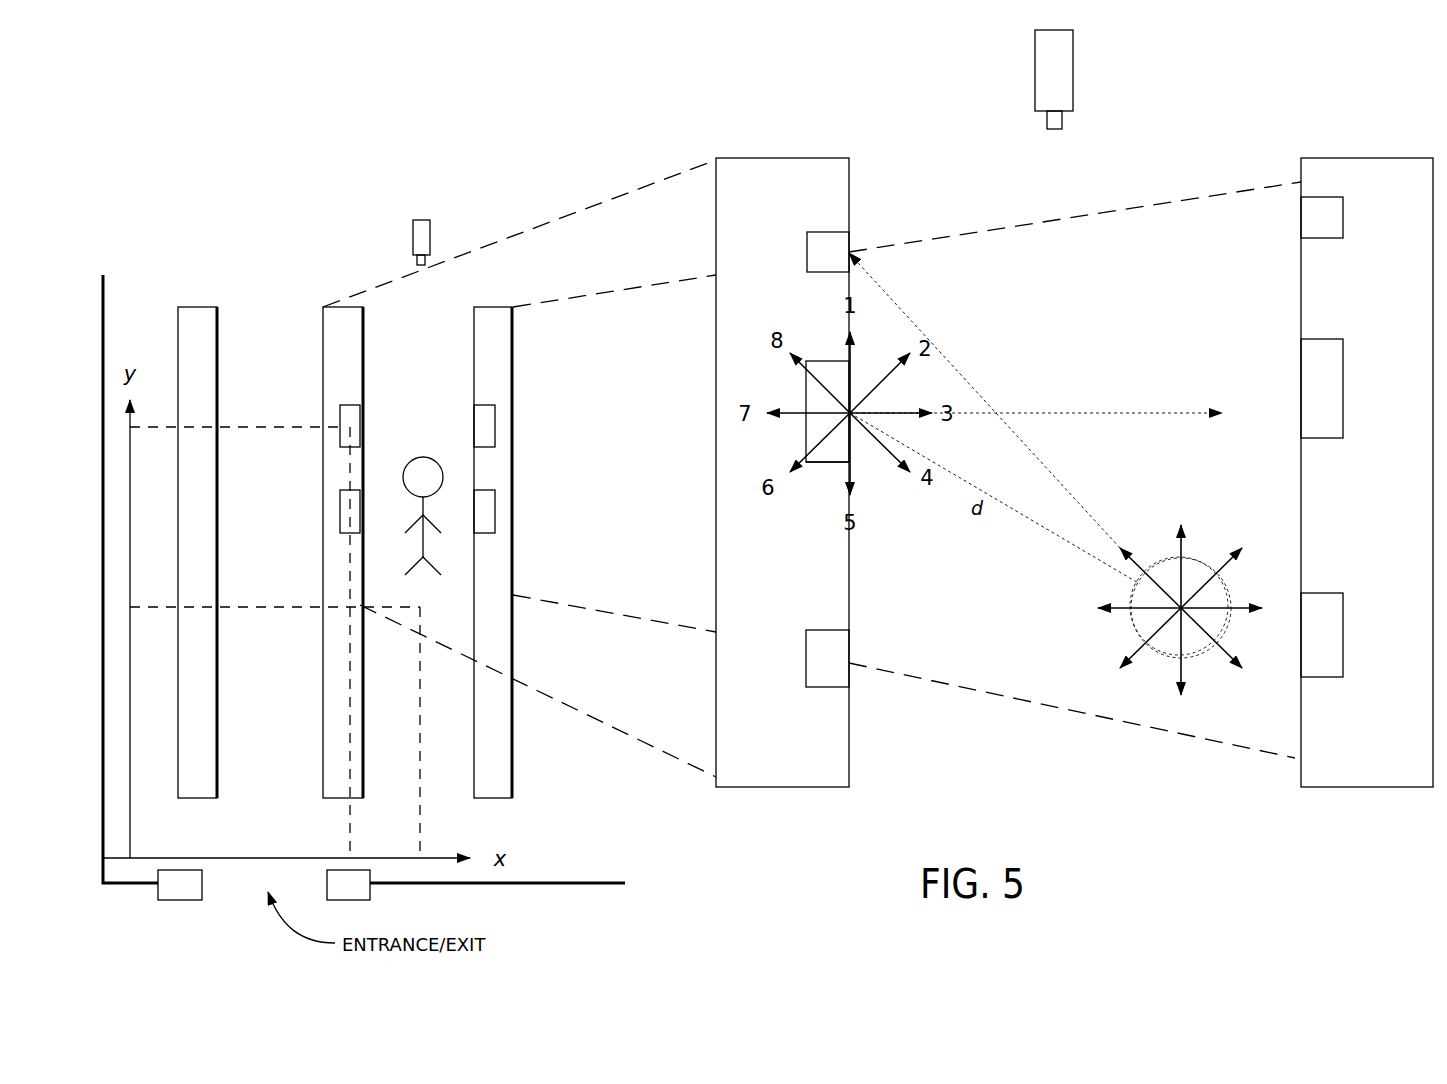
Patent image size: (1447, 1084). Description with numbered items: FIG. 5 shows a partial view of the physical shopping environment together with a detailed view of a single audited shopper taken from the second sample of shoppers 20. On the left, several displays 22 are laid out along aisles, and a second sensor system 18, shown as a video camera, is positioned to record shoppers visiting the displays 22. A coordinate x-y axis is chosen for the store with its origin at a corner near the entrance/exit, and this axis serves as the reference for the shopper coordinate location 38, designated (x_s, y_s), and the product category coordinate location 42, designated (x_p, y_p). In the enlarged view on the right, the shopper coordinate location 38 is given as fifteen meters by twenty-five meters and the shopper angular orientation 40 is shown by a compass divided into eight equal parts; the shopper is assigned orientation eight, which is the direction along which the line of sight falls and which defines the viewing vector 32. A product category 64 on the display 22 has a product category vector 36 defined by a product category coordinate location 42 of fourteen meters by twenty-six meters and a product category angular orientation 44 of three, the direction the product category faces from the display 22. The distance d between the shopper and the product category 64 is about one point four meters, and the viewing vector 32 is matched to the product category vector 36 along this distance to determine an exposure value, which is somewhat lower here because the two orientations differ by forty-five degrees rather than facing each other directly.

The second sensor system 18 is at (412, 235).
The second sample of shoppers 20 is at (1158, 655).
The display 22 is at (805, 478).
The viewing vector 32 is at (933, 343).
The product category vector 36 is at (1135, 413).
The shopper coordinate location 38 is at (455, 592).
The shopper angular orientation 40 is at (1233, 558).
The product category coordinate location 42 is at (330, 386).
The product category angular orientation 44 is at (833, 361).
The product category 64 is at (817, 462).